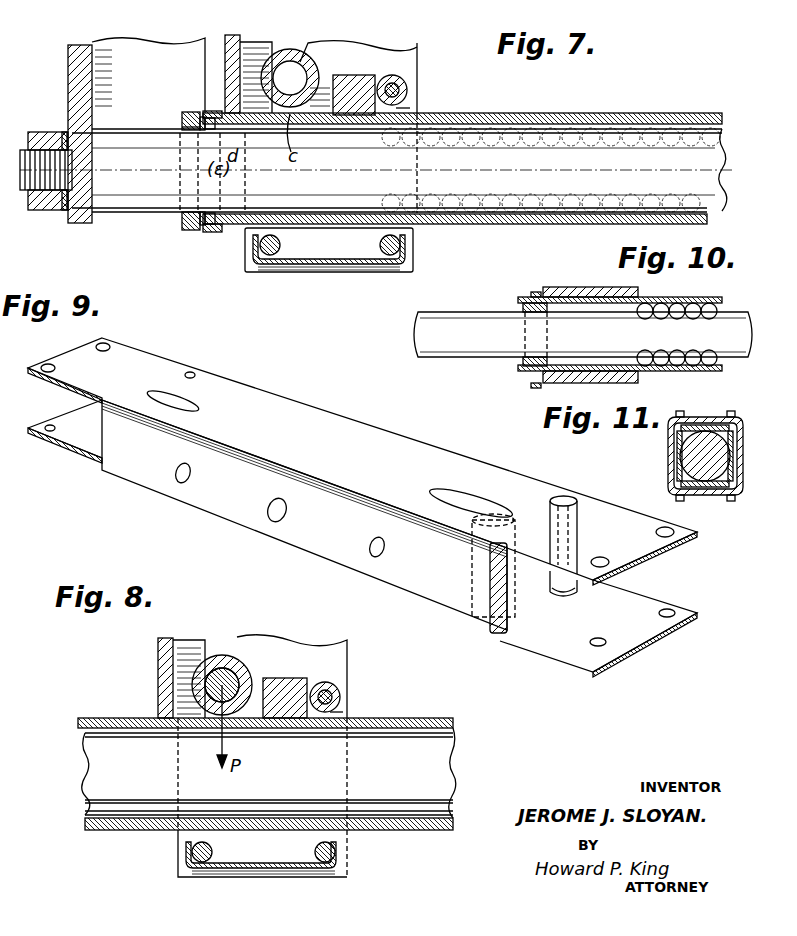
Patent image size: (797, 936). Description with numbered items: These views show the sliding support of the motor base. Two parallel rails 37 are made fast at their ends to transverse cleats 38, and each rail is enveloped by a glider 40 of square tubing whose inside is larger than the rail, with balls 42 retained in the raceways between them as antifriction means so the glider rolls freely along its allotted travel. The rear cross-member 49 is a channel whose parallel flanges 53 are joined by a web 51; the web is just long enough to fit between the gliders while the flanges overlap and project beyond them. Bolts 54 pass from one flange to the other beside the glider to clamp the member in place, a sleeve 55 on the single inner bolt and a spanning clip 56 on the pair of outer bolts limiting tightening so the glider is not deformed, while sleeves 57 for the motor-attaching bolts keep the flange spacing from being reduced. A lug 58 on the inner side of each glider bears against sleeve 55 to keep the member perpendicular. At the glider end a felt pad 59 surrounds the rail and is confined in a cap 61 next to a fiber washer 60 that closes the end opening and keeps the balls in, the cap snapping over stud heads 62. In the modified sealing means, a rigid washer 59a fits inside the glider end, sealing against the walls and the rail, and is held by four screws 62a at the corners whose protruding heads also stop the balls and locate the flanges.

In FIG. 7, the rail 37 is at (152, 214).
In FIG. 10, the rail 37 is at (413, 328).
In FIG. 11, the rail 37 is at (688, 452).
In FIG. 8, the rail 37 is at (438, 757).
In FIG. 7, the transverse cleat 38 is at (84, 45).
In FIG. 7, the glider 40 is at (666, 113).
In FIG. 10, the glider 40 is at (718, 299).
In FIG. 11, the glider 40 is at (742, 440).
In FIG. 8, the glider 40 is at (436, 718).
In FIG. 7, the ball 42 is at (532, 201).
In FIG. 10, the ball 42 is at (702, 366).
In FIG. 7, the rear cross-member 49 is at (417, 46).
In FIG. 7, the web 51 is at (233, 37).
In FIG. 9, the web 51 is at (440, 601).
In FIG. 8, the web 51 is at (156, 668).
In FIG. 7, the flange 53 is at (352, 44).
In FIG. 10, the flange 53 is at (580, 287).
In FIG. 9, the flange 53 is at (372, 441).
In FIG. 8, the flange 53 is at (336, 646).
In FIG. 7, the bolt 54 is at (407, 89).
In FIG. 9, the bolt 54 is at (562, 500).
In FIG. 8, the bolt 54 is at (346, 700).
In FIG. 7, the sleeve 55 is at (407, 101).
In FIG. 9, the sleeve 55 is at (573, 590).
In FIG. 8, the sleeve 55 is at (341, 683).
In FIG. 7, the spanning clip 56 is at (320, 272).
In FIG. 8, the spanning clip 56 is at (255, 868).
In FIG. 7, the sleeve 57 is at (306, 60).
In FIG. 9, the sleeve 57 is at (506, 596).
In FIG. 8, the sleeve 57 is at (241, 660).
In FIG. 7, the lug 58 is at (350, 77).
In FIG. 8, the lug 58 is at (285, 678).
In FIG. 7, the felt pad 59 is at (185, 113).
In FIG. 7, the washer 60 is at (200, 113).
In FIG. 7, the cap 61 is at (182, 126).
In FIG. 7, the stud head 62 is at (214, 111).
In FIG. 10, the washer 59a is at (523, 362).
In FIG. 11, the washer 59a is at (737, 452).
In FIG. 10, the screw 62a is at (533, 295).
In FIG. 11, the screw 62a is at (684, 416).